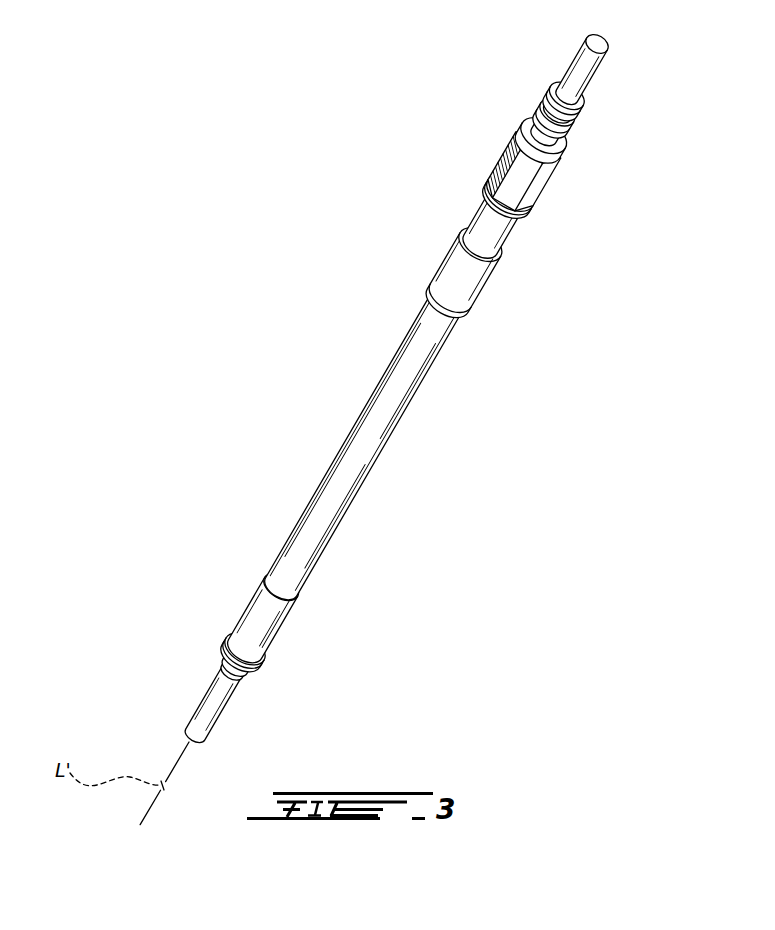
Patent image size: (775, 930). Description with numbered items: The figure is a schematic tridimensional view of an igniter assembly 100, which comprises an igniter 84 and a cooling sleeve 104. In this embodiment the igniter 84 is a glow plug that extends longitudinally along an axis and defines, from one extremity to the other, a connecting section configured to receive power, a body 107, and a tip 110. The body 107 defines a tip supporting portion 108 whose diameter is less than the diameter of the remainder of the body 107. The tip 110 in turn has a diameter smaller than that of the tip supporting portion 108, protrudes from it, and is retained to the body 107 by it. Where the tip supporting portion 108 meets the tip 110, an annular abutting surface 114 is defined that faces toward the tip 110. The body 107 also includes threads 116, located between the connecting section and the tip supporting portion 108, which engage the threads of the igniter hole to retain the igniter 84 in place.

The igniter assembly 100 is at (415, 432).
The threads 116 is at (494, 293).
The igniter 84 is at (436, 485).
The body 107 is at (341, 528).
The cooling sleeve 104 is at (287, 638).
The tip supporting portion 108 is at (240, 659).
The annular abutting surface 114 is at (224, 666).
The tip 110 is at (213, 721).